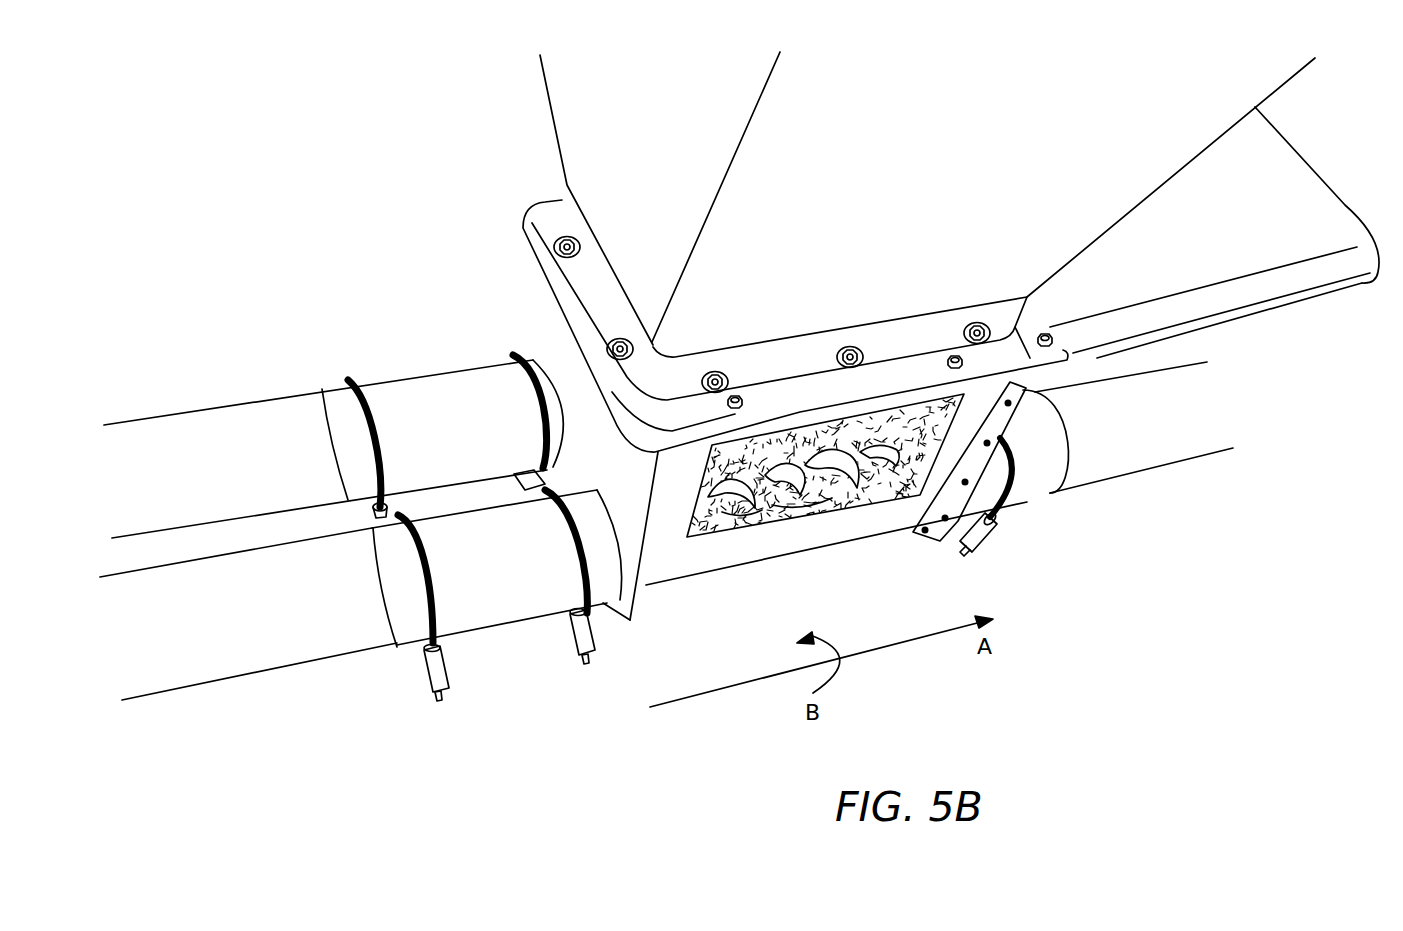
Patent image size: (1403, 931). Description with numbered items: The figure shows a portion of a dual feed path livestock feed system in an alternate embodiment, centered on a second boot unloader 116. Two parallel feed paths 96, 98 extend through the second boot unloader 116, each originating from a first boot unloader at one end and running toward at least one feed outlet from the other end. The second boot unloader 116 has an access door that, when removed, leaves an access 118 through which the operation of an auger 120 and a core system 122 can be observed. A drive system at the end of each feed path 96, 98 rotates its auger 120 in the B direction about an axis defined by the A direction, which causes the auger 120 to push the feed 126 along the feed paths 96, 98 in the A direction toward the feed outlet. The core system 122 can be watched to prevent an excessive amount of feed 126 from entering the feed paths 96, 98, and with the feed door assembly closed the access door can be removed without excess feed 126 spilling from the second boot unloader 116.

The feed path 96 is at (310, 630).
The feed path 98 is at (262, 427).
The second boot unloader 116 is at (543, 325).
The access 118 is at (718, 478).
The auger 120 is at (870, 483).
The core system 122 is at (772, 490).
The feed 126 is at (819, 488).